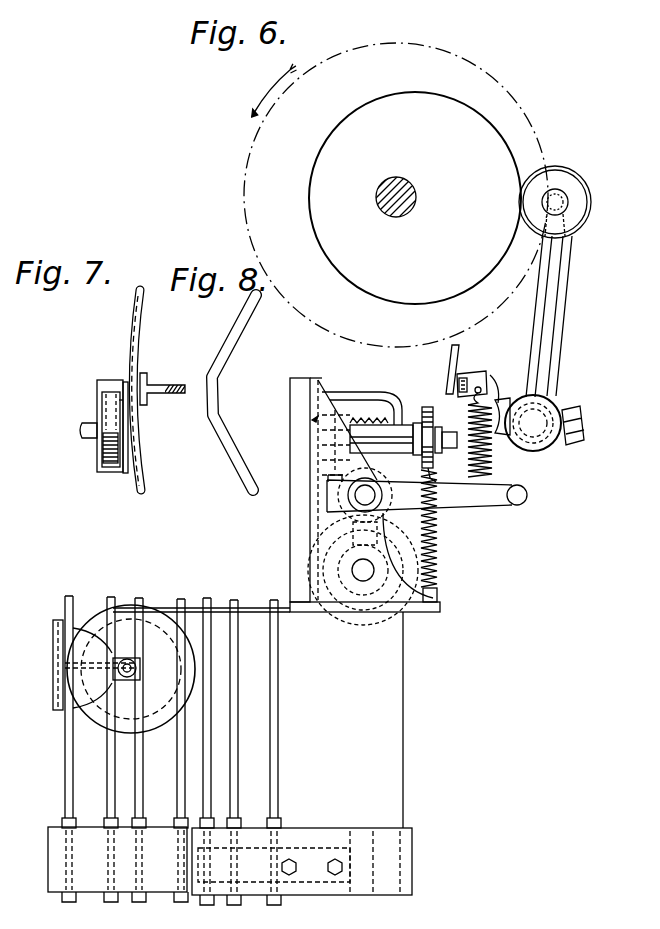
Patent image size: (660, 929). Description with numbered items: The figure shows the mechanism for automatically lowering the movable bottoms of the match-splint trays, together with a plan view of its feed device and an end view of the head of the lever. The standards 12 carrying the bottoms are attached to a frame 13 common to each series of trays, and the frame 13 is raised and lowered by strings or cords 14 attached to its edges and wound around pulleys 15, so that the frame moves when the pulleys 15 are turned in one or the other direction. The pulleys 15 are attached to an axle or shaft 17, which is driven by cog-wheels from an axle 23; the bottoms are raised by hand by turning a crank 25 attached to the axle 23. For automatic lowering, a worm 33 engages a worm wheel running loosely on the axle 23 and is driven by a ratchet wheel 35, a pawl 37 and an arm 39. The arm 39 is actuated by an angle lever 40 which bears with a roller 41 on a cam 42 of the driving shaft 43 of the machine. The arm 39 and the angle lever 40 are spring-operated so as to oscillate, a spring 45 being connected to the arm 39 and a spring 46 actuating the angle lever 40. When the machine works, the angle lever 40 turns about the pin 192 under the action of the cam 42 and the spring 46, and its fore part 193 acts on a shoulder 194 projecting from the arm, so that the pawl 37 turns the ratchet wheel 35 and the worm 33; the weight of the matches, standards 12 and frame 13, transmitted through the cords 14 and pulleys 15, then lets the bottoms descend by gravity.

In FIG. 6, the standards 12 is at (270, 705).
In FIG. 6, the frame 13 is at (302, 890).
In FIG. 6, the strings or cords 14 is at (403, 742).
In FIG. 6, the pulleys 15 is at (363, 614).
In FIG. 6, the axle or shaft 17 is at (363, 570).
In FIG. 6, the axle 23 is at (362, 497).
In FIG. 6, the crank 25 is at (504, 503).
In FIG. 6, the worm 33 is at (366, 420).
In FIG. 6, the ratchet wheel 35 is at (423, 413).
In FIG. 7, the ratchet wheel 35 is at (105, 455).
In FIG. 7, the pawl 37 is at (108, 412).
In FIG. 6, the arm 39 is at (438, 428).
In FIG. 7, the arm 39 is at (122, 407).
In FIG. 6, the angle lever 40 is at (567, 280).
In FIG. 7, the angle lever 40 is at (170, 385).
In FIG. 6, the roller 41 is at (591, 194).
In FIG. 6, the cam 42 is at (497, 141).
In FIG. 6, the driving shaft 43 is at (418, 197).
In FIG. 6, the spring 45 is at (440, 549).
In FIG. 6, the spring 46 is at (493, 465).
In FIG. 6, the pin 192 is at (545, 418).
In FIG. 6, the fore part 193 is at (459, 347).
In FIG. 7, the fore part 193 is at (134, 305).
In FIG. 8, the fore part 193 is at (252, 319).
In FIG. 6, the shoulder 194 is at (433, 460).
In FIG. 7, the shoulder 194 is at (125, 388).